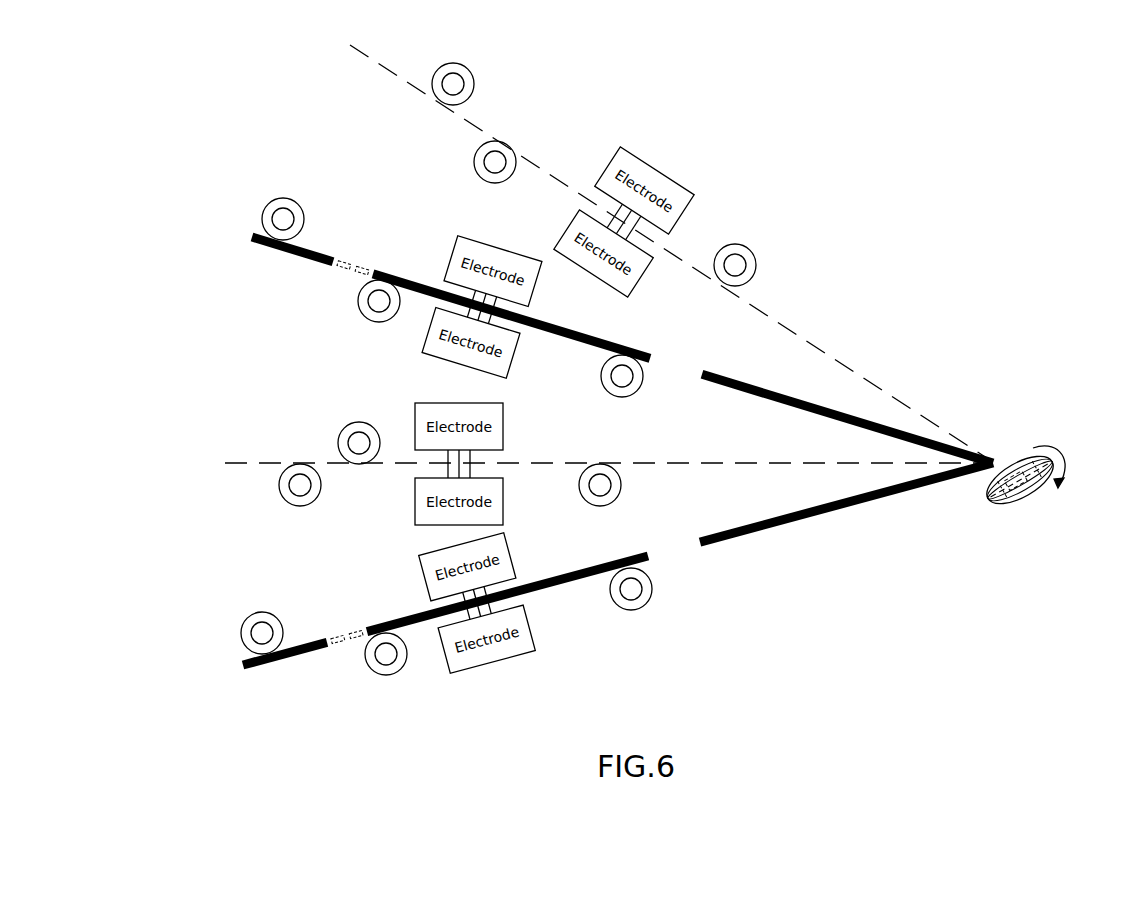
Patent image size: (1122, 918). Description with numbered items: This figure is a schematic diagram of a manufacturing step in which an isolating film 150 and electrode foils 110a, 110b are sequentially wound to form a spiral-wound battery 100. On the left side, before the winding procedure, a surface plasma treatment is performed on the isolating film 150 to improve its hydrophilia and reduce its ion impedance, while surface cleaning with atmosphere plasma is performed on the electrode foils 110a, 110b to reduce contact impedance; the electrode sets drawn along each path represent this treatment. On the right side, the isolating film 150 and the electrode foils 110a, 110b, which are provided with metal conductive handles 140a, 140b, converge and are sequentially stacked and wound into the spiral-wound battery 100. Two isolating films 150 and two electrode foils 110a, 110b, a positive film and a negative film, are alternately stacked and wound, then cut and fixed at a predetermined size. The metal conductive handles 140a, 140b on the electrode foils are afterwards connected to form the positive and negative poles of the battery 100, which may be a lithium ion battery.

The battery 100 is at (1014, 444).
The electrode foil 110a is at (237, 224).
The electrode foil 110b is at (222, 668).
The metal conductive handle 140a is at (1003, 497).
The metal conductive handle 140b is at (1048, 497).
The isolating film 150 is at (482, 128).